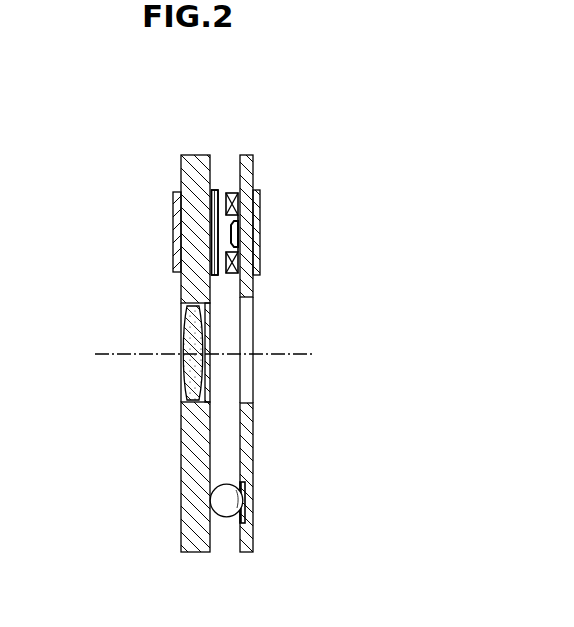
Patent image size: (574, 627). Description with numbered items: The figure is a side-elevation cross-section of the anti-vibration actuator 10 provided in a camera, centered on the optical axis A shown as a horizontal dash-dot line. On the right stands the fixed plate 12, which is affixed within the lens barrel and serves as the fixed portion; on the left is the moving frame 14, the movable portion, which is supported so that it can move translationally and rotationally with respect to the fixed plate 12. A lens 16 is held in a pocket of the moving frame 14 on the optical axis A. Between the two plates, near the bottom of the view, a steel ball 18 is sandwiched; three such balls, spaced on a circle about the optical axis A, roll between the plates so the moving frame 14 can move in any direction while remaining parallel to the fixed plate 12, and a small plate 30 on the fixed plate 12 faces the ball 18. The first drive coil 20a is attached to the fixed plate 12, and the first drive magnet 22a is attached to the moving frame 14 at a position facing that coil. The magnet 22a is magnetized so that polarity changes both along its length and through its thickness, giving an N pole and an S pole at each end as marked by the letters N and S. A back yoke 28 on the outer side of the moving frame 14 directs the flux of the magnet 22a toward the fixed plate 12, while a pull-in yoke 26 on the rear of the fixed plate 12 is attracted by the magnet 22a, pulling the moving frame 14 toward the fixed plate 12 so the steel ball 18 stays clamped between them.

The anti-vibration actuator 10 is at (152, 556).
The fixed plate 12 is at (253, 162).
The moving frame 14 is at (181, 167).
The lens 16 is at (181, 370).
The steel ball 18 is at (227, 517).
The first drive coil 20a is at (238, 202).
The first drive magnet 22a is at (216, 190).
The pull-in yoke 26 is at (260, 253).
The back yoke 28 is at (173, 224).
The ball guide plate 30 is at (241, 486).
The optical axis A is at (292, 353).
The N pole N is at (213, 190).
The S pole S is at (219, 190).